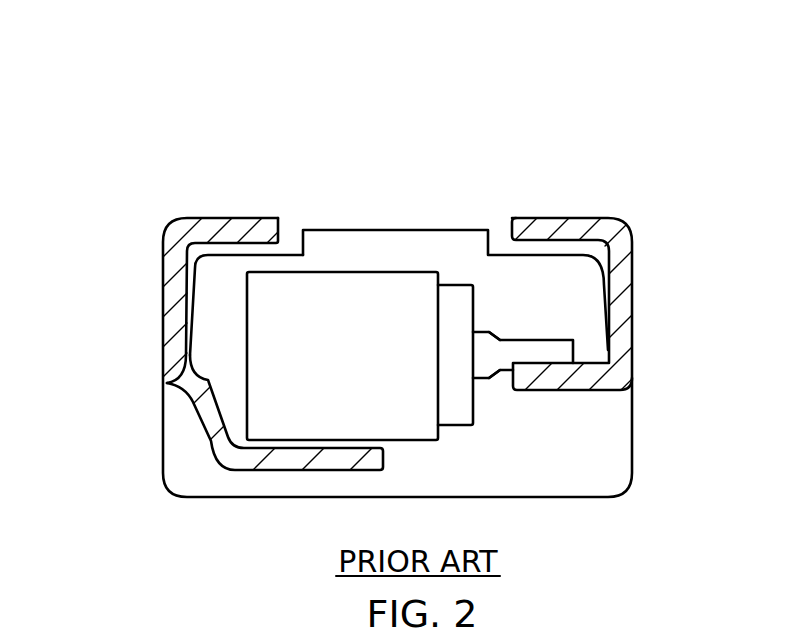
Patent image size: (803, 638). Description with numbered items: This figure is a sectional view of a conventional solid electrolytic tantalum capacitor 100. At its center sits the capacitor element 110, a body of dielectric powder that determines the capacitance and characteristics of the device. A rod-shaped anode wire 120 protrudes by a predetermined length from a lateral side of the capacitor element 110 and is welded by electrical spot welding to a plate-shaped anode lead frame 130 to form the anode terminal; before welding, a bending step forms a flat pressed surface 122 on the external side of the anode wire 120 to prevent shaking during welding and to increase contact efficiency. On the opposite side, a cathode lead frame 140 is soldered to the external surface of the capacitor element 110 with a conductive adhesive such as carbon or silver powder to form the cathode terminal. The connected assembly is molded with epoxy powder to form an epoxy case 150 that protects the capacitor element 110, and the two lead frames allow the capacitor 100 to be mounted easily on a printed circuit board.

The tantalum capacitor 100 is at (668, 167).
The capacitor element 110 is at (337, 297).
The anode wire 120 is at (550, 350).
The flat pressed surface 122 is at (525, 338).
The anode lead frame 130 is at (622, 356).
The cathode lead frame 140 is at (187, 350).
The epoxy case 150 is at (461, 250).